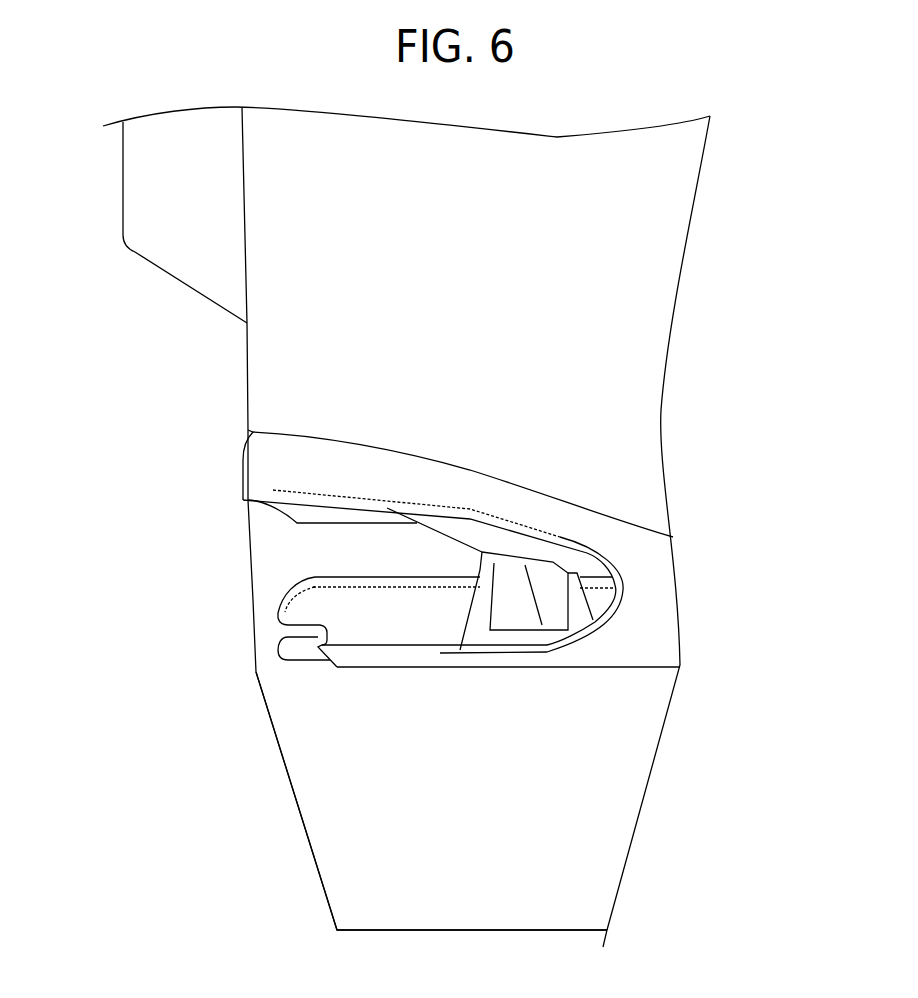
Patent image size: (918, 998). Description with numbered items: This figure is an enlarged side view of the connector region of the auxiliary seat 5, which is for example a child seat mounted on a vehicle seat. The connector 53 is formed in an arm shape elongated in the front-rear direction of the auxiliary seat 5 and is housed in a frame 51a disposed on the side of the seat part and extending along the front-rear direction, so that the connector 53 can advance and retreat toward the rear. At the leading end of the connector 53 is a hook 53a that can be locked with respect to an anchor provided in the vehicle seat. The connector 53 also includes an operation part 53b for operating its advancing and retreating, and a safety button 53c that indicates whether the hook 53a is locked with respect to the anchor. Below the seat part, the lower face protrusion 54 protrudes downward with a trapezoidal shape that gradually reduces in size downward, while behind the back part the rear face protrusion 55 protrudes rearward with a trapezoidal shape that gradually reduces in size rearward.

The auxiliary seat 5 is at (106, 667).
The frame 51a is at (542, 492).
The connector 53 is at (278, 594).
The hook 53a is at (284, 636).
The operation part 53b is at (543, 575).
The safety button 53c is at (583, 606).
The lower face protrusion 54 is at (306, 902).
The rear face protrusion 55 is at (137, 274).